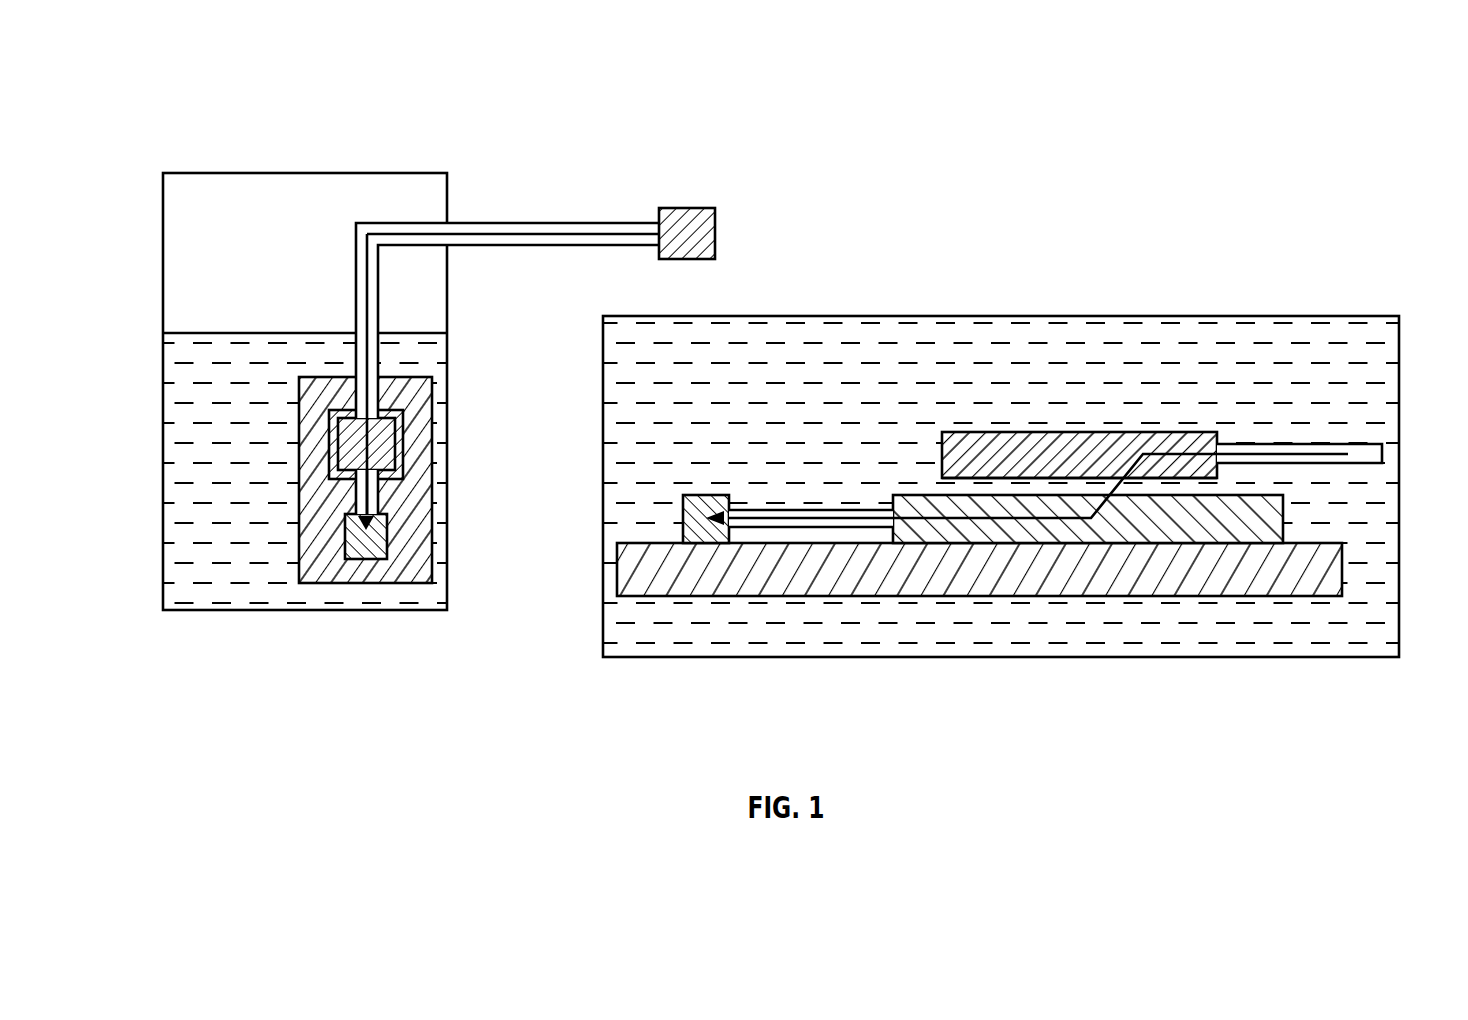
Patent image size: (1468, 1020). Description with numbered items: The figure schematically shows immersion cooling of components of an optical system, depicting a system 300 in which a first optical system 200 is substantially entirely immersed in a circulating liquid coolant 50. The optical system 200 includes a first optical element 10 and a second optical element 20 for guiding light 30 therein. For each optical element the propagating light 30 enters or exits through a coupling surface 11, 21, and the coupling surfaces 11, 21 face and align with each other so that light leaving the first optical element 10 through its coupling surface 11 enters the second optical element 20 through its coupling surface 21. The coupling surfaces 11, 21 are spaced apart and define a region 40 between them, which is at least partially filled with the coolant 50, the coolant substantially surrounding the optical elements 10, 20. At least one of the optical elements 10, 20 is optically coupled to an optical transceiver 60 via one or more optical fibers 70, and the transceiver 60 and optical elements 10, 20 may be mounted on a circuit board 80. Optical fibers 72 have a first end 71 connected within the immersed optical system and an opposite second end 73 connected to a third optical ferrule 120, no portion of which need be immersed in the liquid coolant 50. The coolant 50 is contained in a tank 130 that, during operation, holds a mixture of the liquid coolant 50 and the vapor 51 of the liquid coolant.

The first optical element 10 is at (405, 427).
The coupling surface 11 is at (1033, 477).
The second optical element 20 is at (400, 460).
The coupling surface 21 is at (1237, 493).
The light 30 is at (368, 263).
The region 40 is at (934, 481).
The coolant 50 is at (183, 377).
The vapor 51 is at (245, 187).
The optical transceiver 60 is at (367, 560).
The optical fibers 70 is at (356, 504).
The first end 71 is at (356, 418).
The optical fibers 72 is at (494, 223).
The second end 73 is at (663, 230).
The circuit board 80 is at (323, 583).
The third optical ferrule 120 is at (693, 208).
The tank 130 is at (163, 247).
The optical system 200 is at (414, 486).
The system 300 is at (156, 84).